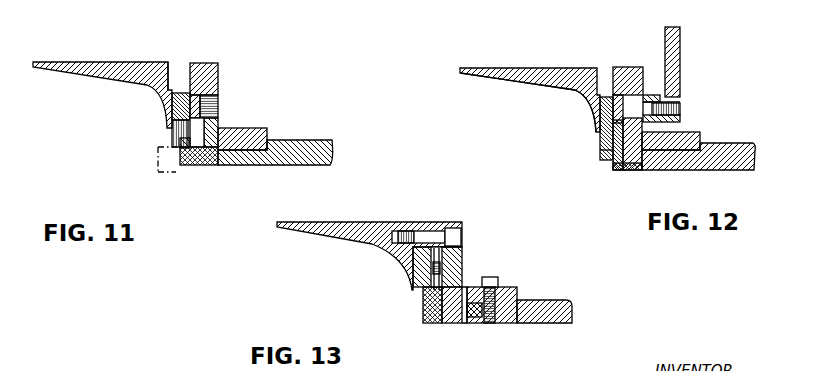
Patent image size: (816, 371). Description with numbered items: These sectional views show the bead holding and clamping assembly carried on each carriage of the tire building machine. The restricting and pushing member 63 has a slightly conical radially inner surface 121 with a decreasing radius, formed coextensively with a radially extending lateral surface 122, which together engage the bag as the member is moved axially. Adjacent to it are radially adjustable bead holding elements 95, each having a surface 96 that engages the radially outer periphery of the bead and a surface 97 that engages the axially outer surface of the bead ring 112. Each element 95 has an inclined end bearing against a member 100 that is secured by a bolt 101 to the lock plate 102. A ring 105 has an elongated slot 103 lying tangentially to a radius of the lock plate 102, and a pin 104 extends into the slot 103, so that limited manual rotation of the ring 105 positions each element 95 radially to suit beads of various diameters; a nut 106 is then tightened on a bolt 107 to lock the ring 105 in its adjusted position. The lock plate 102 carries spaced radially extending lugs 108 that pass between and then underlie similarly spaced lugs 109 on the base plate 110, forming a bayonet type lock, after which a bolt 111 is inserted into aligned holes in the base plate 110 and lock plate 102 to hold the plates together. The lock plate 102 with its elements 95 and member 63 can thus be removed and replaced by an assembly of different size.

In FIG. 11, the restricting and pushing member 63 is at (87, 67).
In FIG. 12, the restricting and pushing member 63 is at (545, 72).
In FIG. 13, the restricting and pushing member 63 is at (361, 230).
In FIG. 11, the bead holding element 95 is at (172, 108).
In FIG. 12, the bead holding element 95 is at (598, 128).
In FIG. 11, the surface 96 is at (180, 160).
In FIG. 12, the surface 96 is at (608, 162).
In FIG. 11, the surface 97 is at (162, 148).
In FIG. 12, the surface 97 is at (598, 154).
In FIG. 13, the member 100 is at (420, 287).
In FIG. 13, the bolt 101 is at (436, 268).
In FIG. 11, the lock plate 102 is at (210, 73).
In FIG. 12, the lock plate 102 is at (624, 67).
In FIG. 13, the lock plate 102 is at (450, 313).
In FIG. 11, the elongated slot 103 is at (176, 114).
In FIG. 11, the pin 104 is at (195, 128).
In FIG. 11, the ring 105 is at (192, 165).
In FIG. 12, the ring 105 is at (622, 167).
In FIG. 13, the ring 105 is at (438, 318).
In FIG. 12, the nut 106 is at (673, 97).
In FIG. 12, the bolt 107 is at (682, 108).
In FIG. 11, the lug 108 is at (236, 140).
In FIG. 12, the lug 108 is at (685, 136).
In FIG. 13, the lug 108 is at (473, 310).
In FIG. 12, the lug 109 is at (650, 152).
In FIG. 13, the lug 109 is at (468, 297).
In FIG. 11, the base plate 110 is at (334, 155).
In FIG. 12, the base plate 110 is at (732, 168).
In FIG. 13, the base plate 110 is at (565, 299).
In FIG. 13, the bolt 111 is at (498, 278).
In FIG. 11, the bead ring 112 is at (160, 163).
In FIG. 12, the radially inner surface 121 is at (508, 87).
In FIG. 11, the radially extending lateral surface 122 is at (150, 82).
In FIG. 12, the radially extending lateral surface 122 is at (587, 93).